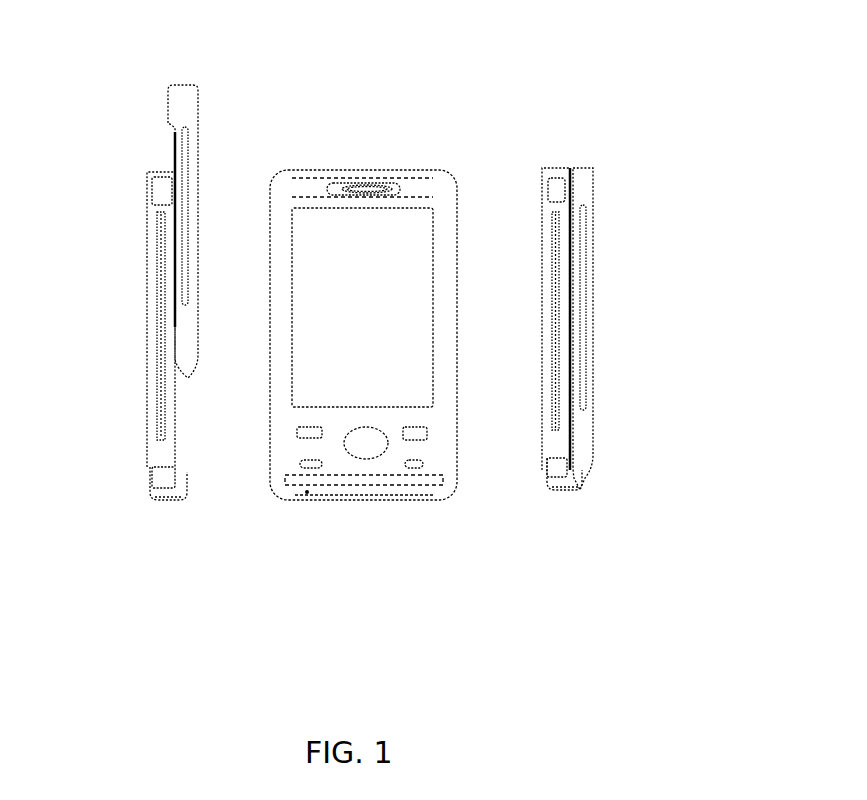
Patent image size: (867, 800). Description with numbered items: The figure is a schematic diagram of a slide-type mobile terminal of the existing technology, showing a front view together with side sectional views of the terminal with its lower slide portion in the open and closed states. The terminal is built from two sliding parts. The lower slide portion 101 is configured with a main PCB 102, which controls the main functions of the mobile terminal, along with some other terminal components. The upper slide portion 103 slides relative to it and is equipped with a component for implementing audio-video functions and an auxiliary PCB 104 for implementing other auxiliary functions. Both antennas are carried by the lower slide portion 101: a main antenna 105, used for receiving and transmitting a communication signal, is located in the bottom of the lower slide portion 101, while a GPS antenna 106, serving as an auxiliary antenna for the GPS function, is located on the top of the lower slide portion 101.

The lower slide portion 101 is at (160, 448).
The main Printed Circuit Board (PCB) 102 is at (160, 393).
The upper slide portion 103 is at (178, 93).
The auxiliary PCB 104 is at (178, 140).
The main antenna 105 is at (558, 483).
The GPS antenna 106 is at (555, 193).